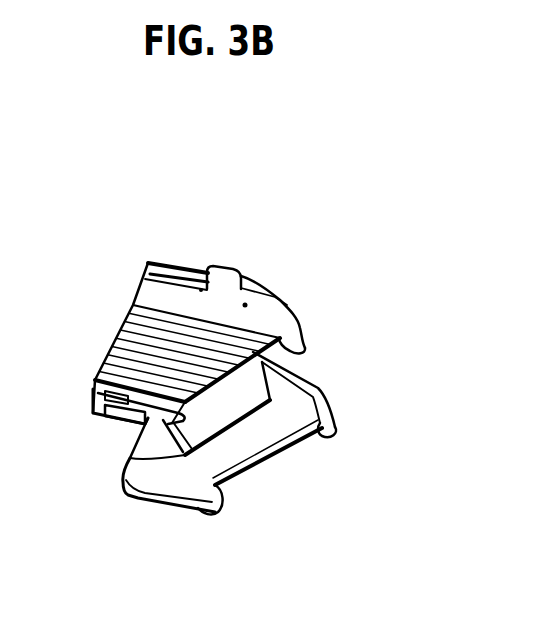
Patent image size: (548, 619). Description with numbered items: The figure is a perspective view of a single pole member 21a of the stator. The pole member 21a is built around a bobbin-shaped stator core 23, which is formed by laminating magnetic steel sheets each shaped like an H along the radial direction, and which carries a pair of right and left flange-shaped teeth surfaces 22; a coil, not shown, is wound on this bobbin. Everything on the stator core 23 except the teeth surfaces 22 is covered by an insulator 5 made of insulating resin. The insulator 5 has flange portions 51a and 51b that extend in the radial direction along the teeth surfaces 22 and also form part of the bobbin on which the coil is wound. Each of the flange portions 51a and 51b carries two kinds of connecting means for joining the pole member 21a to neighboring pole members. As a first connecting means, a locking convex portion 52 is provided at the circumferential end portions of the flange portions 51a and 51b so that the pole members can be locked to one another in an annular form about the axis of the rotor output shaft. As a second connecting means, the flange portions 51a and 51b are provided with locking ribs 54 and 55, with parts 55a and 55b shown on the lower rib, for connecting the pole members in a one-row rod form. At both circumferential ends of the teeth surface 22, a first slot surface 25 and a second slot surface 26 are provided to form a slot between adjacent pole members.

The pole member 21a is at (298, 224).
The first slot surface 25 is at (133, 303).
The locking rib 54 is at (199, 265).
The insulator 5 is at (256, 264).
The flange portion 51a is at (280, 313).
The locking convex portion 52 is at (306, 338).
The stator core 23 is at (108, 330).
The teeth surface 22 is at (133, 355).
The locking rib 55 is at (75, 422).
The upper engaging portion 55b is at (97, 388).
The lower engaging portion 55a is at (117, 418).
The flange portion 51b is at (168, 506).
The second slot surface 26 is at (246, 396).